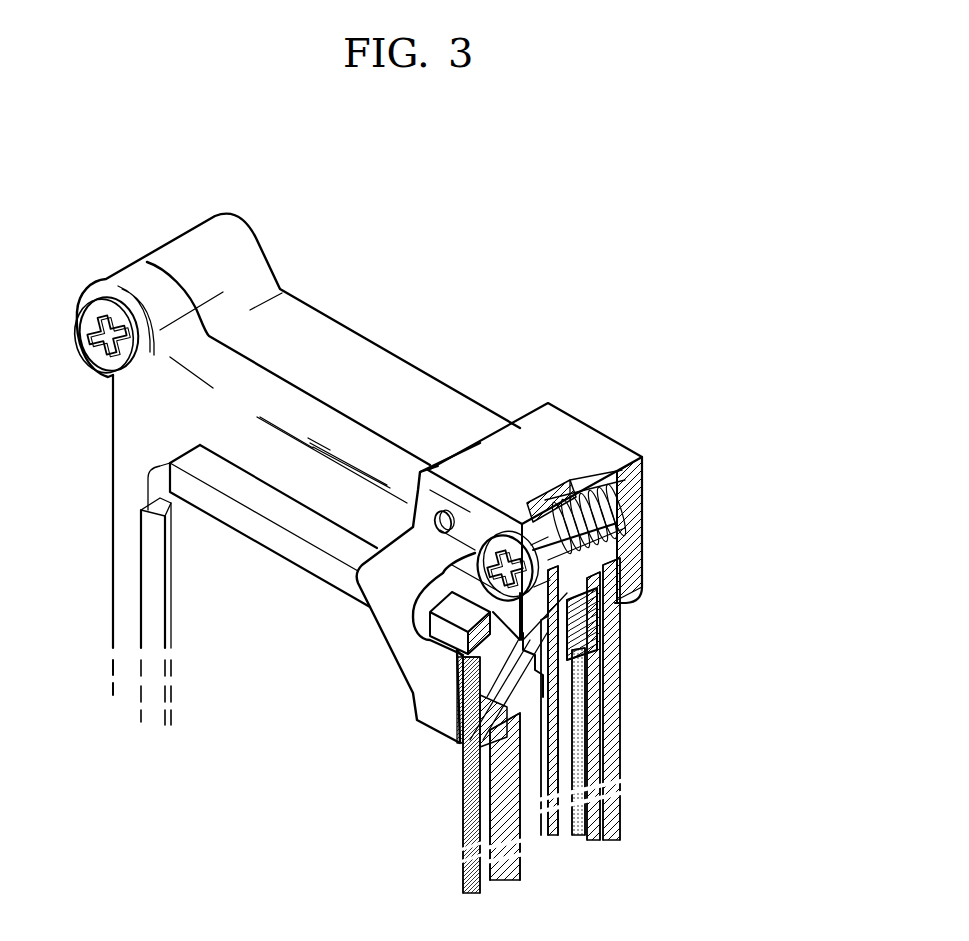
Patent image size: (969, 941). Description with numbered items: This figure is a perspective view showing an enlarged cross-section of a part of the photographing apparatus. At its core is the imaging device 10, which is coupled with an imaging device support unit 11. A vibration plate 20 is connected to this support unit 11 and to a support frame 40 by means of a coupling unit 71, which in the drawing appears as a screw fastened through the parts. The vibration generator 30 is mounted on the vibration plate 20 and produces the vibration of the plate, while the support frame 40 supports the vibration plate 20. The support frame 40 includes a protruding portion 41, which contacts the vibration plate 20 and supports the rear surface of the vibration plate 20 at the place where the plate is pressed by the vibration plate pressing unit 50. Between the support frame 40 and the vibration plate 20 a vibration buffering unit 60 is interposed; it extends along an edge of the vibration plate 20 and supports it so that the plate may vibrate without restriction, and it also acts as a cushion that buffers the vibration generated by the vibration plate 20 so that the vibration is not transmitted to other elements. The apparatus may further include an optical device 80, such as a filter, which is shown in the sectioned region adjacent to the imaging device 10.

The imaging device 10 is at (627, 818).
The imaging device support unit 11 is at (598, 437).
The vibration plate 20 is at (208, 640).
The vibration generator 30 is at (345, 540).
The support frame 40 is at (124, 273).
The protruding portion 41 is at (483, 695).
The vibration plate pressing unit 50 is at (450, 720).
The vibration buffering unit 60 is at (147, 538).
The coupling unit 71 is at (483, 516).
The optical device 80 is at (507, 850).